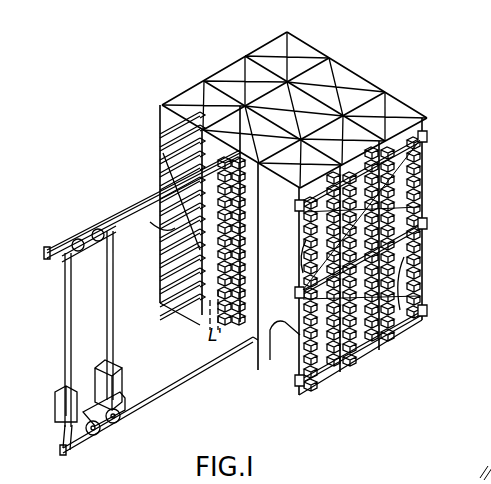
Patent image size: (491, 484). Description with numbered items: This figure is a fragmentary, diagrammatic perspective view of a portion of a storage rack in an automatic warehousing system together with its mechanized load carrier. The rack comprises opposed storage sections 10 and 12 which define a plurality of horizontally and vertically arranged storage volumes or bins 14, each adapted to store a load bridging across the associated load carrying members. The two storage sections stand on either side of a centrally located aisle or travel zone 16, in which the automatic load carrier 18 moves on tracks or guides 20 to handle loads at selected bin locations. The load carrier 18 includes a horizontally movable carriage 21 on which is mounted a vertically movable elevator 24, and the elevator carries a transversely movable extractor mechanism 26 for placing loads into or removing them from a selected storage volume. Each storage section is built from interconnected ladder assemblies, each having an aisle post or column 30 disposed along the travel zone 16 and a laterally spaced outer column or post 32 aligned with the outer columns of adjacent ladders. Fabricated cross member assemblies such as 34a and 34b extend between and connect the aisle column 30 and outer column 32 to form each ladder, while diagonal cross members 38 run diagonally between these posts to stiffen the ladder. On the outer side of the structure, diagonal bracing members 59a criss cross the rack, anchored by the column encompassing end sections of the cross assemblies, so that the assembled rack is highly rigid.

The storage section 10 is at (398, 106).
The storage section 12 is at (318, 46).
The storage volumes or bins 14 is at (160, 252).
The aisle or travel zone 16 is at (360, 88).
The mechanized load carrier 18 is at (51, 407).
The tracks or guides 20 is at (115, 212).
The carriage 21 is at (65, 427).
The elevator 24 is at (118, 391).
The extractor mechanism 26 is at (106, 436).
The aisle post or column 30 is at (258, 360).
The outer column or post 32 is at (430, 260).
The diagonal cross members 38 is at (160, 152).
The cross member assembly 34a is at (263, 300).
The cross member assembly 34b is at (196, 332).
The diagonal bracing members 59a is at (415, 353).